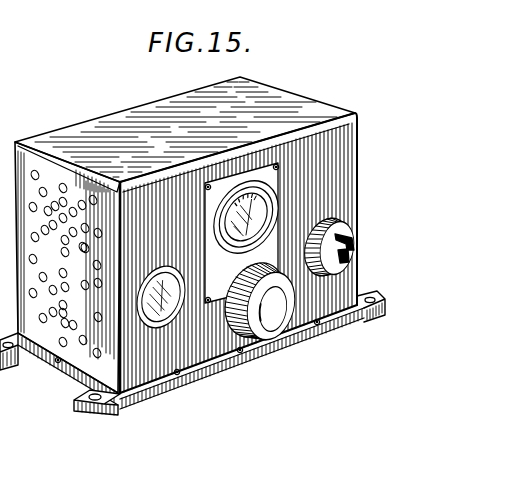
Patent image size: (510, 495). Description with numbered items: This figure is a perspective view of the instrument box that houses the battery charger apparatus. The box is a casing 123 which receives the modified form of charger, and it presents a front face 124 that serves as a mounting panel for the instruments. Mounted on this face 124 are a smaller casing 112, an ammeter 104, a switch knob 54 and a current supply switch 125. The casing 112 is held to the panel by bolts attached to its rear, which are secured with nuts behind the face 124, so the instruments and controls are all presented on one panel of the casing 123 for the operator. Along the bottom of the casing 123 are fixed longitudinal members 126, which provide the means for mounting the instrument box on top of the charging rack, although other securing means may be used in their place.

The casing 123 is at (268, 86).
The face 124 is at (338, 156).
The ammeter 104 is at (247, 178).
The casing 112 is at (164, 340).
The switch knob 54 is at (278, 333).
The current supply switch 125 is at (350, 258).
The longitudinal members 126 is at (97, 413).